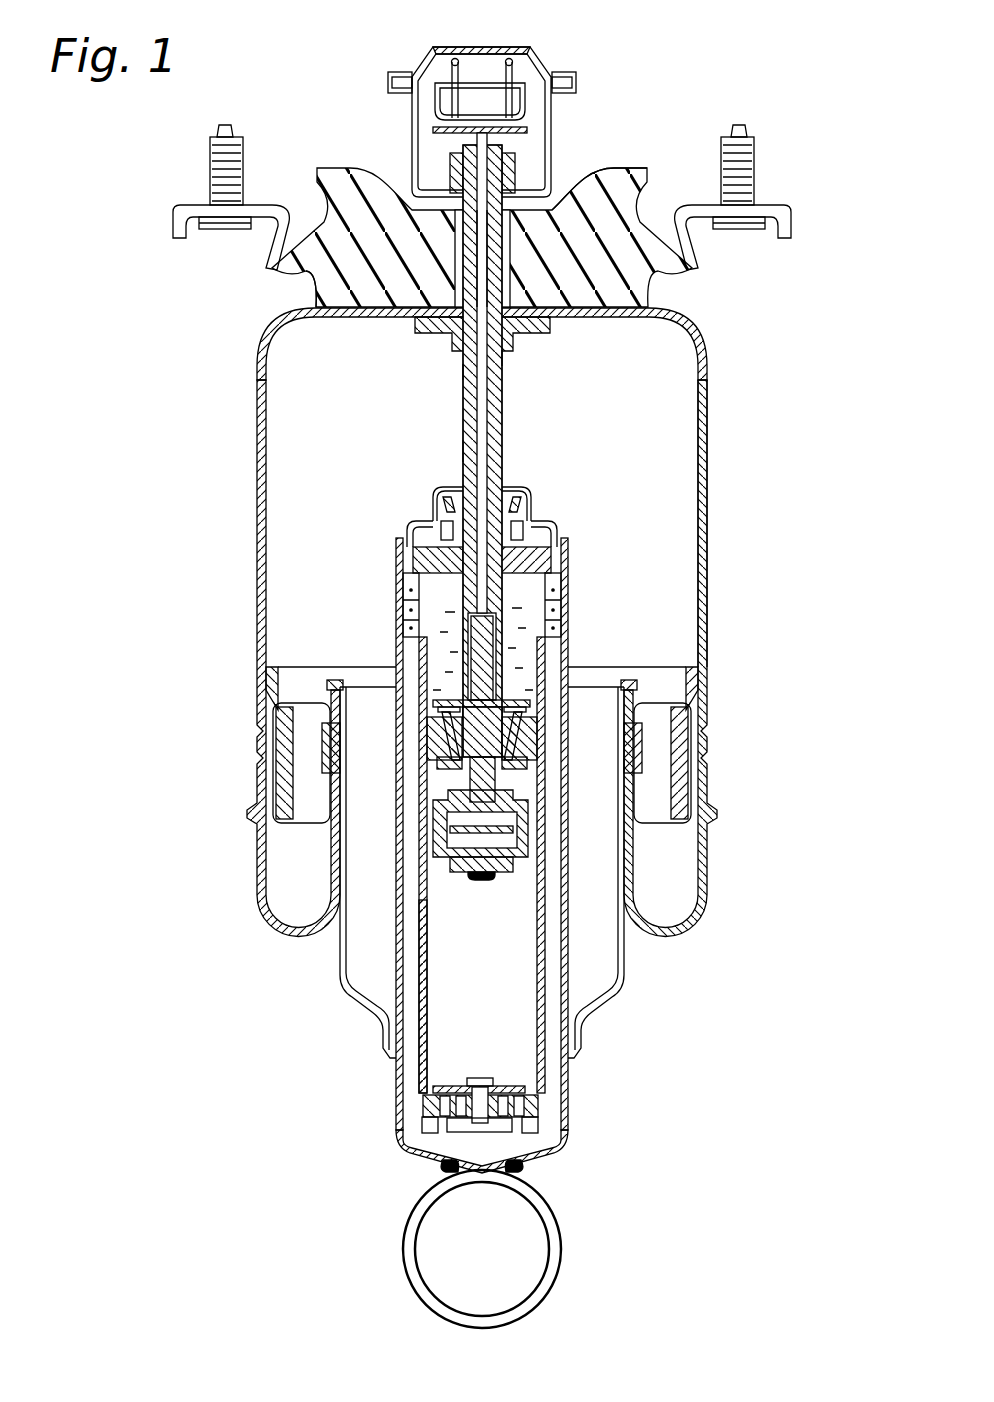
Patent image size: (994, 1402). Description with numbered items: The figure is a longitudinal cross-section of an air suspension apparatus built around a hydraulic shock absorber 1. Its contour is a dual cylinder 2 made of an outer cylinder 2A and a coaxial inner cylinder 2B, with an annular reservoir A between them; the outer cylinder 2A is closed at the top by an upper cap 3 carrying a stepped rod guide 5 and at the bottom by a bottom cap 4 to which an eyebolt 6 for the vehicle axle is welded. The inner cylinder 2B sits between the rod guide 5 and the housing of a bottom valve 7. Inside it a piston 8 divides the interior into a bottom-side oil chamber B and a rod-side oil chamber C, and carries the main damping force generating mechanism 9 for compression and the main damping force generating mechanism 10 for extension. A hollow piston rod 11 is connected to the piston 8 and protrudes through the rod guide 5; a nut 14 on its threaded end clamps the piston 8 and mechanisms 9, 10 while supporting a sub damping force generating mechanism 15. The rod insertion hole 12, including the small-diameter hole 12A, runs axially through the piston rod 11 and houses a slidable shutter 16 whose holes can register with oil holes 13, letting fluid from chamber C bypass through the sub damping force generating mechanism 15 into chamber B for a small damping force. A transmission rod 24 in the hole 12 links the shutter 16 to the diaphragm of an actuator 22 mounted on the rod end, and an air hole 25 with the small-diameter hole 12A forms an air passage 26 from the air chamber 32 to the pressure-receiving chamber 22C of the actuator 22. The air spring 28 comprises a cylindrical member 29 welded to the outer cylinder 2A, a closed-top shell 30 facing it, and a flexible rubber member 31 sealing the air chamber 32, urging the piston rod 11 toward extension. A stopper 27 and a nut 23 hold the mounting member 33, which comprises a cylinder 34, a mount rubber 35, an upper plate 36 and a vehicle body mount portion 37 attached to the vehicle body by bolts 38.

The hydraulic shock absorber 1 is at (572, 540).
The cylinder 2 is at (340, 968).
The outer cylinder 2A is at (566, 975).
The inner cylinder 2B is at (547, 962).
The upper cap 3 is at (429, 507).
The bottom cap 4 is at (423, 1147).
The rod guide 5 is at (404, 550).
The eyebolt 6 is at (562, 1237).
The bottom valve 7 is at (430, 1103).
The piston 8 is at (540, 740).
The main damping force generating mechanism for the compression stroke 9 is at (515, 695).
The main damping force generating mechanism for the extension stroke 10 is at (440, 765).
The piston rod 11 is at (465, 452).
The rod insertion hole 12 is at (487, 445).
The small-diameter hole 12A is at (480, 405).
The oil holes 13 is at (468, 692).
The nut 14 is at (520, 825).
The sub damping force generating mechanism 15 is at (447, 865).
The shutter 16 is at (497, 690).
The actuator 22 is at (545, 60).
The pressure-receiving chamber 22C is at (527, 147).
The nut 23 is at (447, 160).
The transmission rod 24 is at (478, 372).
The air hole 25 is at (494, 358).
The air passage 26 is at (481, 277).
The stopper 27 is at (418, 327).
The air spring 28 is at (250, 600).
The cylindrical member 29 is at (385, 960).
The shell 30 is at (697, 378).
The rubber member 31 is at (705, 888).
The air chamber 32 is at (664, 543).
The mounting member 33 is at (316, 162).
The cylinder 34 is at (447, 253).
The mount rubber 35 is at (316, 279).
The upper plate 36 is at (610, 172).
The vehicle body mount portion 37 is at (787, 220).
The bolts 38 is at (208, 167).
The reservoir A is at (410, 741).
The bottom-side oil chamber B is at (433, 1010).
The rod-side oil chamber C is at (432, 645).